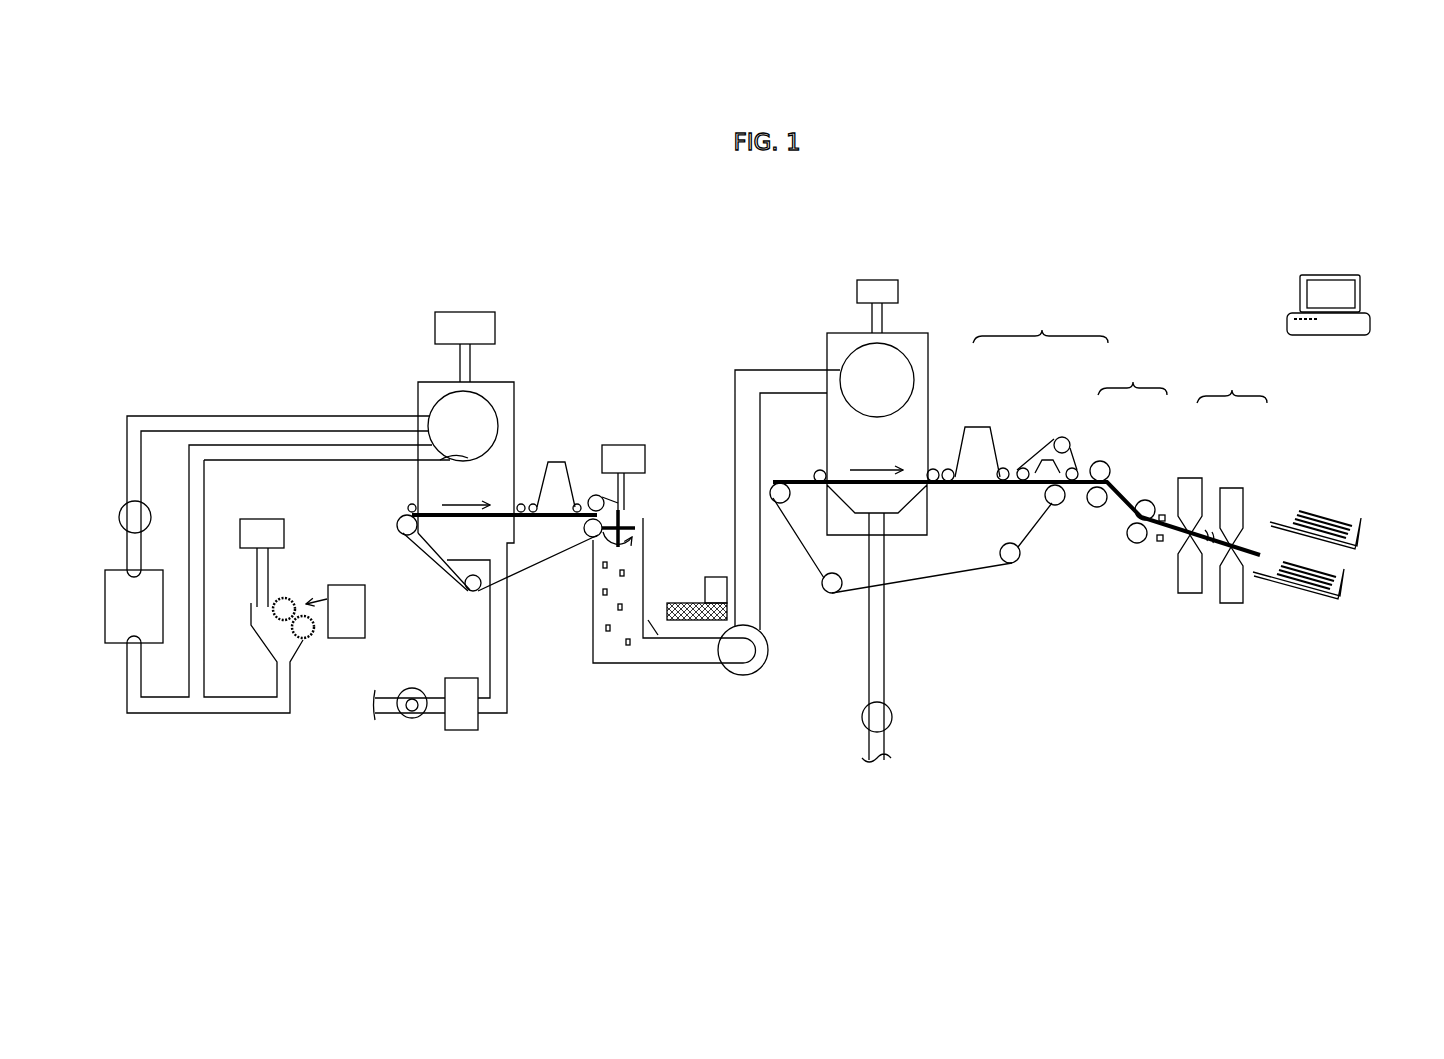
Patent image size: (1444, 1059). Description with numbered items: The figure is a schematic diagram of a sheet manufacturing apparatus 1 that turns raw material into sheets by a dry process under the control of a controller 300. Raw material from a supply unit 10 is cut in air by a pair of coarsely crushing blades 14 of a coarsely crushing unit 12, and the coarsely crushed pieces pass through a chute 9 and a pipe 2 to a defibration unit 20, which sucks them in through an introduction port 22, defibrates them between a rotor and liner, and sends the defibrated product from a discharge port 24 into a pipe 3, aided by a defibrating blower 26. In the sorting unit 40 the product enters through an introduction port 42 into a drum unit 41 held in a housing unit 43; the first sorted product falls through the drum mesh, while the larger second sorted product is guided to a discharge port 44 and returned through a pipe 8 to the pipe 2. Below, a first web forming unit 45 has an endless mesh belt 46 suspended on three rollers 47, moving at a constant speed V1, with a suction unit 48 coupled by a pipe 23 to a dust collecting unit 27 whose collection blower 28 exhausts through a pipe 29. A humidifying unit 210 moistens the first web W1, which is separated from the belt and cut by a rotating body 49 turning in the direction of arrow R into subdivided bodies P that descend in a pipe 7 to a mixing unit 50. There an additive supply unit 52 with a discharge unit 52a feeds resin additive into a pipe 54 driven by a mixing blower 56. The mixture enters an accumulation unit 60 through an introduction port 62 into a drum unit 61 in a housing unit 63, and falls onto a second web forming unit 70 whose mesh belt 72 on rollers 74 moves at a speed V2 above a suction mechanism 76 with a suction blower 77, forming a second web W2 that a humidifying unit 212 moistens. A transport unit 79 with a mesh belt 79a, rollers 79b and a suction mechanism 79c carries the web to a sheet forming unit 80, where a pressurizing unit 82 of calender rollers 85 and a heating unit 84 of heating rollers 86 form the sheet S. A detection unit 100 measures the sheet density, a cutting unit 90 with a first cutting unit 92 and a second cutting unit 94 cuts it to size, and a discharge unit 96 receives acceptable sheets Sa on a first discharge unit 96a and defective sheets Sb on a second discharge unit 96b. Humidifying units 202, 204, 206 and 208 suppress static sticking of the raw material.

The sheet manufacturing apparatus 1 is at (1130, 268).
The pipe 2 is at (244, 713).
The pipe 3 is at (154, 416).
The pipe 7 is at (622, 592).
The pipe 8 is at (299, 449).
The chute 9 is at (255, 636).
The supply unit 10 is at (349, 640).
The coarsely crushing unit 12 is at (246, 607).
The coarsely crushing blade 14 is at (294, 599).
The defibration unit 20 is at (116, 654).
The introduction port 22 is at (145, 643).
The pipe 23 is at (507, 705).
The discharge port 24 is at (149, 574).
The defibrating blower 26 is at (145, 508).
The dust collecting unit 27 is at (460, 730).
The collection blower 28 is at (412, 720).
The pipe 29 is at (392, 698).
The sorting unit 40 is at (520, 372).
The drum unit 41 is at (500, 422).
The introduction port 42 is at (432, 423).
The housing unit 43 is at (514, 397).
The discharge port 44 is at (440, 478).
The first web forming unit 45 is at (545, 592).
The mesh belt 46 is at (525, 573).
The rollers 47 is at (397, 528).
The suction unit 48 is at (447, 547).
The rotating body 49 is at (622, 520).
The mixing unit 50 is at (778, 665).
The additive supply unit 52 is at (715, 577).
The discharge unit 52a is at (680, 623).
The pipe 54 is at (747, 482).
The mixing blower 56 is at (770, 650).
The accumulation unit 60 is at (937, 322).
The drum unit 61 is at (910, 357).
The introduction port 62 is at (850, 388).
The housing unit 63 is at (912, 333).
The second web forming unit 70 is at (920, 586).
The mesh belt 72 is at (797, 480).
The rollers 74 is at (780, 505).
The suction mechanism 76 is at (893, 530).
The suction blower 77 is at (892, 715).
The transport unit 79 is at (1040, 388).
The mesh belt 79a is at (1032, 457).
The rollers 79b is at (1062, 437).
The suction mechanism 79c is at (1045, 462).
The sheet forming unit 80 is at (1132, 377).
The pressurizing unit 82 is at (1102, 460).
The heating unit 84 is at (1147, 499).
The calender rollers 85 is at (1098, 507).
The heating rollers 86 is at (1137, 543).
The cutting unit 90 is at (1232, 455).
The first cutting unit 92 is at (1189, 477).
The second cutting unit 94 is at (1229, 483).
The discharge unit 96 is at (1363, 568).
The first discharge unit 96a is at (1368, 540).
The second discharge unit 96b is at (1307, 593).
The detection unit 100 is at (1163, 513).
The humidifying unit 202 is at (262, 519).
The humidifying unit 204 is at (467, 312).
The humidifying unit 206 is at (625, 445).
The humidifying unit 208 is at (882, 280).
The humidifying unit 210 is at (557, 475).
The humidifying unit 212 is at (977, 442).
The controller 300 is at (1367, 292).
The subdivided bodies P is at (607, 632).
The arrow R is at (627, 553).
The sheet S is at (1160, 543).
The sheet Sa is at (1333, 517).
The sheet Sb is at (1267, 570).
The speed V1 is at (466, 490).
The speed V2 is at (876, 454).
The first web W1 is at (527, 518).
The second web W2 is at (1017, 490).